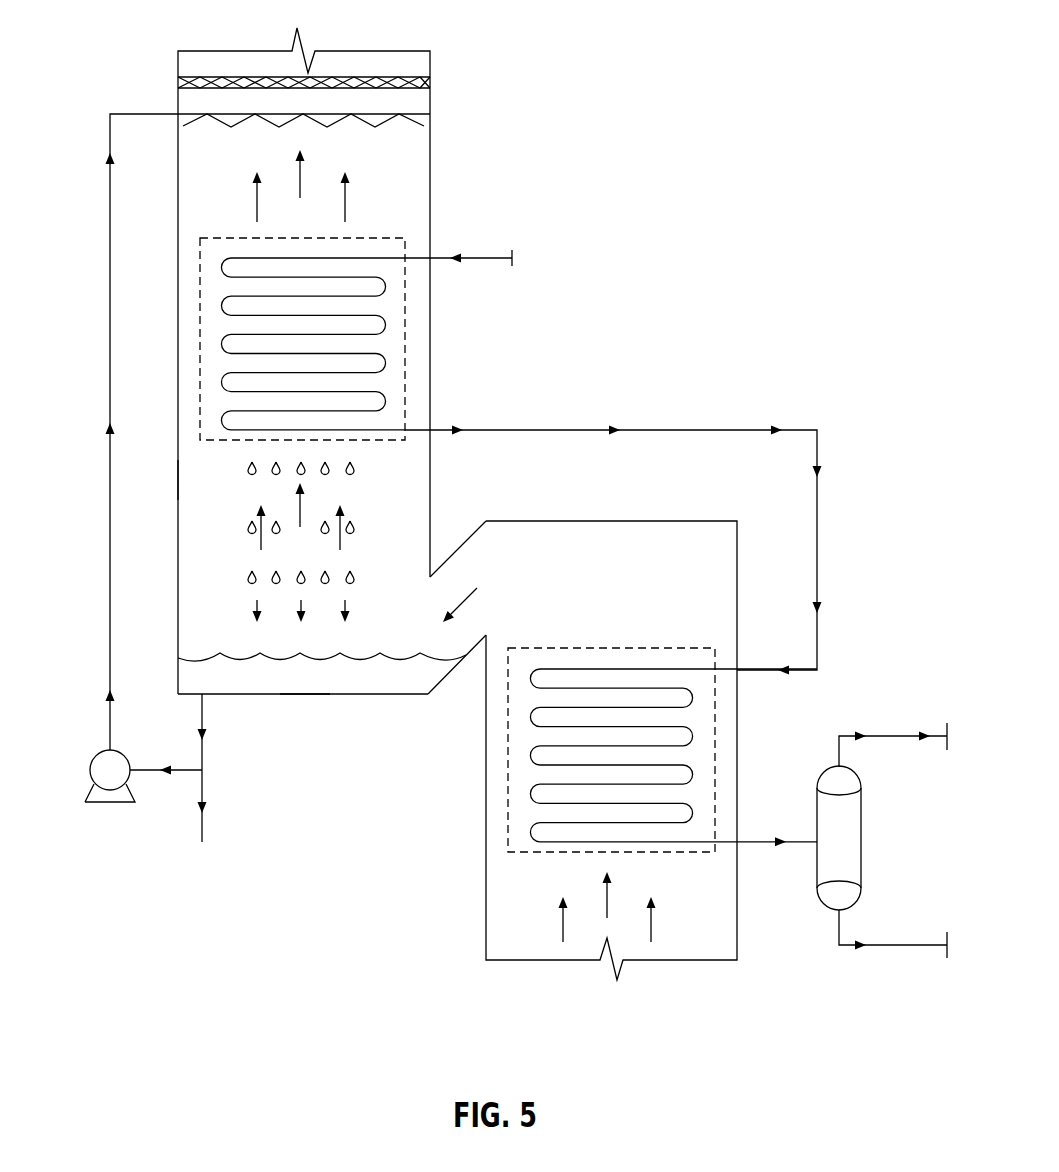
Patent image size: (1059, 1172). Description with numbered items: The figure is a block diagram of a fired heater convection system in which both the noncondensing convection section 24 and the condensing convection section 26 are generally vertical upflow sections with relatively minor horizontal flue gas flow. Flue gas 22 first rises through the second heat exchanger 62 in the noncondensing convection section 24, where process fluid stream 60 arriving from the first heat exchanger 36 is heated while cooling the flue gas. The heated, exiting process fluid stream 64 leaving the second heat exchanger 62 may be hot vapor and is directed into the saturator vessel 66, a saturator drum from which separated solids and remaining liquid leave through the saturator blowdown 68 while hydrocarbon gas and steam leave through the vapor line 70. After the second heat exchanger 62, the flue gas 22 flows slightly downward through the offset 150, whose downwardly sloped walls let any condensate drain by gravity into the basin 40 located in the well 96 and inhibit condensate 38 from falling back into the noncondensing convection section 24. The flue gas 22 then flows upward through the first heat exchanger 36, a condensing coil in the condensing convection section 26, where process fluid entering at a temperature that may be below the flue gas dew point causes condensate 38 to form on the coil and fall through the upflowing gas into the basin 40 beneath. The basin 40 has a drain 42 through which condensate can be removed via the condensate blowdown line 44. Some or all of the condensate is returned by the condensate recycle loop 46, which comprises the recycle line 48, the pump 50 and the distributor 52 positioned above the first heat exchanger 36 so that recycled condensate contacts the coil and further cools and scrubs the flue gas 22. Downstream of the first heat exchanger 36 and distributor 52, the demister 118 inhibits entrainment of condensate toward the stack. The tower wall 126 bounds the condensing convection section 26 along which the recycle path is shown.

The flue gas 22 is at (300, 518).
The noncondensing convection section 24 is at (824, 695).
The condensing convection section 26 is at (452, 181).
The first heat exchanger 36 is at (200, 324).
The condensate 38 is at (355, 581).
The basin 40 is at (240, 673).
The drain 42 is at (206, 755).
The condensate blowdown line 44 is at (206, 795).
The condensate recycle loop 46 is at (103, 278).
The recycle line 48 is at (140, 772).
The pump 50 is at (100, 768).
The distributor 52 is at (415, 121).
The process fluid stream 60 is at (670, 429).
The second heat exchanger 62 is at (508, 785).
The exiting process fluid stream 64 is at (754, 841).
The saturator vessel 66 is at (845, 850).
The saturator blowdown 68 is at (838, 928).
The vapor line 70 is at (905, 736).
The well 96 is at (300, 694).
The demister 118 is at (188, 82).
The tower wall 126 is at (178, 477).
The offset 150 is at (462, 546).